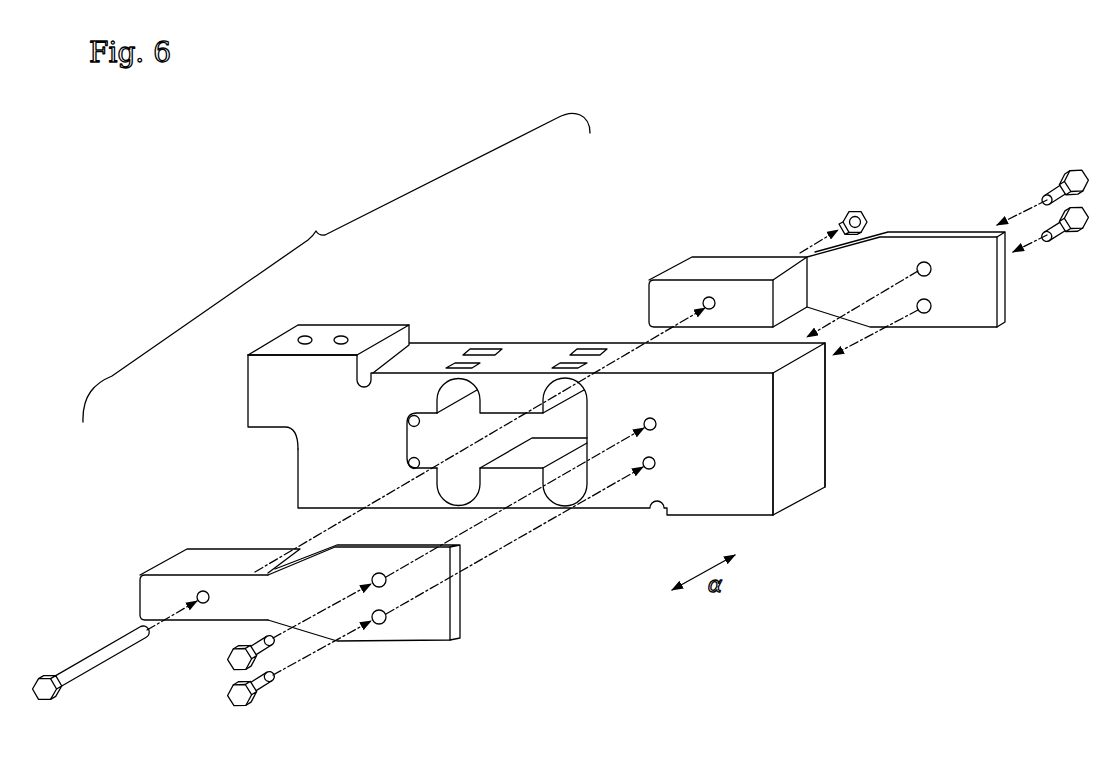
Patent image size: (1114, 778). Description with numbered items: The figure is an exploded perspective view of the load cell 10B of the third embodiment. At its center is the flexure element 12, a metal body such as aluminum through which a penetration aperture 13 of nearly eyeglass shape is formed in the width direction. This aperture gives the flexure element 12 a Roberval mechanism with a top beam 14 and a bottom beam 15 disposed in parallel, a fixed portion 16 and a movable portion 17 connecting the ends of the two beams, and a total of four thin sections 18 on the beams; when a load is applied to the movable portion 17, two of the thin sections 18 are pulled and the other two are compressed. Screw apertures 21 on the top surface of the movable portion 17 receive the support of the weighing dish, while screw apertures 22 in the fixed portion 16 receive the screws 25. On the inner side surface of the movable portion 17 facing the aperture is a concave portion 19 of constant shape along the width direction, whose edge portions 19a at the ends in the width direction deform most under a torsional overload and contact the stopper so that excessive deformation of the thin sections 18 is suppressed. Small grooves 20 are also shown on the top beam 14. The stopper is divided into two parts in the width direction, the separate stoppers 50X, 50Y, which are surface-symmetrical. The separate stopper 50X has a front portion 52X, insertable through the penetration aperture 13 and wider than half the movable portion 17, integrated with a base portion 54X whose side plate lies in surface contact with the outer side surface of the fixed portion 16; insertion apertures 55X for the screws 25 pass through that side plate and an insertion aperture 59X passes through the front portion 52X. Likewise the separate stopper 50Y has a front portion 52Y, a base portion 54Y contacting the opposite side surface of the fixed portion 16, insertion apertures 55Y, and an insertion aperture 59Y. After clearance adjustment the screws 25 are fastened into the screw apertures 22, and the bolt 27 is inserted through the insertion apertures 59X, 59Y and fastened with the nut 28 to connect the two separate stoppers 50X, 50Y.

The load cell 10B is at (336, 267).
The flexure element 12 is at (230, 400).
The penetration aperture 13 is at (558, 425).
The top beam 14 is at (520, 397).
The bottom beam 15 is at (512, 488).
The fixed portion 16 is at (723, 453).
The movable portion 17 is at (352, 423).
The thin section 18 is at (457, 372).
The concave portion 19 is at (405, 443).
The edge portion 19a is at (410, 417).
The groove 20 is at (471, 360).
The screw aperture 21 is at (347, 335).
The screw aperture 22 is at (648, 470).
The screw 25 is at (1050, 194).
The bolt 27 is at (90, 653).
The nut 28 is at (853, 207).
The separate stopper 50X is at (302, 585).
The separate stopper 50Y is at (835, 281).
The front portion 52X is at (245, 555).
The front portion 52Y is at (755, 267).
The base portion 54X is at (423, 628).
The base portion 54Y is at (972, 307).
The insertion aperture 55X is at (379, 625).
The insertion aperture 55Y is at (927, 314).
The insertion aperture 59X is at (198, 593).
The insertion aperture 59Y is at (704, 301).